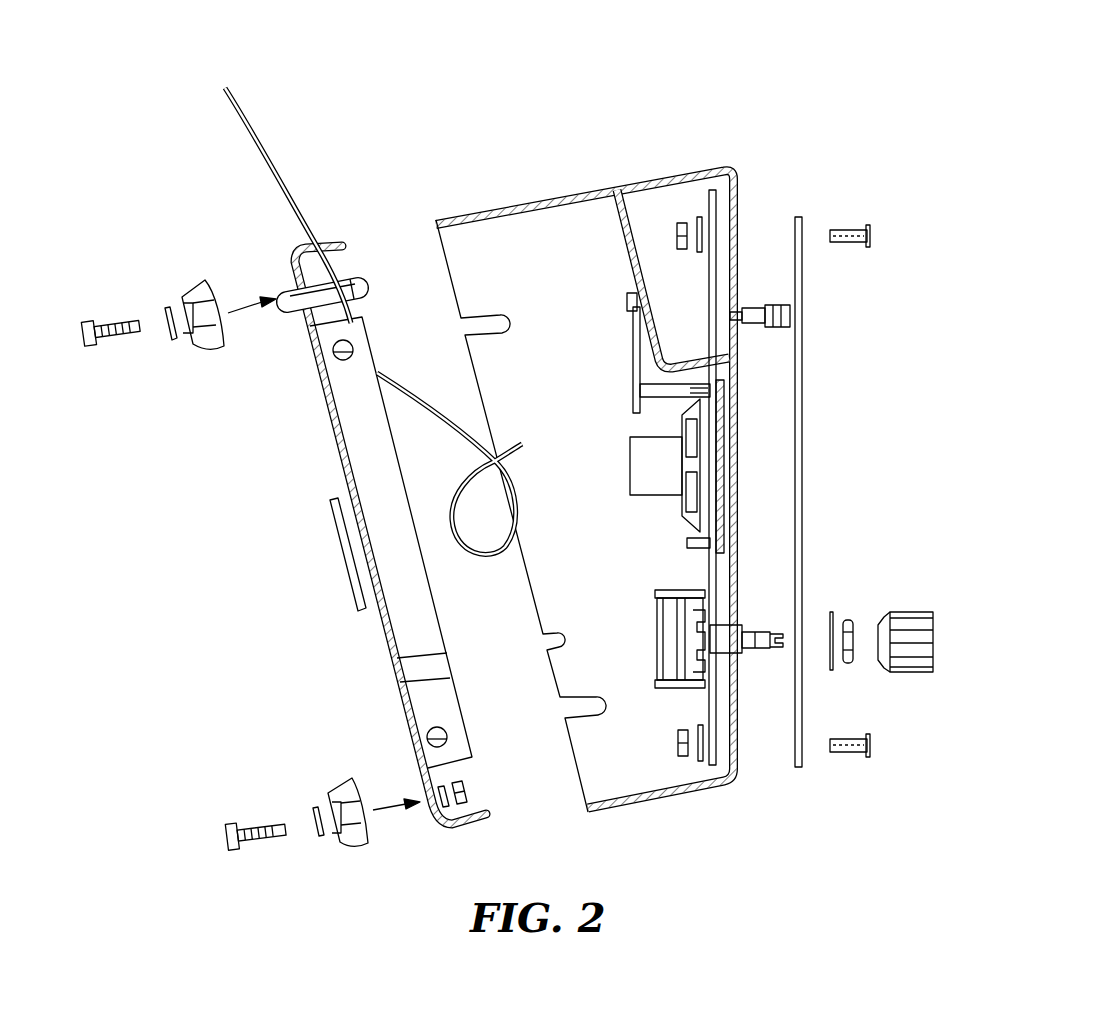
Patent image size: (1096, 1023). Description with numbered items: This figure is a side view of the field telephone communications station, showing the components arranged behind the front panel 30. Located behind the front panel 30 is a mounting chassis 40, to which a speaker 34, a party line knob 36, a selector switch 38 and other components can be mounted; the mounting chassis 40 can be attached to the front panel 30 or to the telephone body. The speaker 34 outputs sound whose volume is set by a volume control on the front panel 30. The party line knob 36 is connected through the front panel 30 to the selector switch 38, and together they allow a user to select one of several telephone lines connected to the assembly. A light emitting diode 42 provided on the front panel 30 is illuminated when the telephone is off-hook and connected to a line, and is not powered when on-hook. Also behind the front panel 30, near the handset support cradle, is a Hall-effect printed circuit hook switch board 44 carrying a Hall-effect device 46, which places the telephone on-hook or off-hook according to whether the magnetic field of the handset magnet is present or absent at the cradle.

The front panel 30 is at (723, 163).
The speaker 34 is at (640, 445).
The party line knob 36 is at (912, 614).
The selector switch 38 is at (660, 617).
The mounting chassis 40 is at (710, 190).
The light emitting diode (LED) 42 is at (775, 305).
The Hall-effect printed circuit hook switch board 44 is at (635, 343).
The Hall-effect device (HED) 46 is at (627, 299).